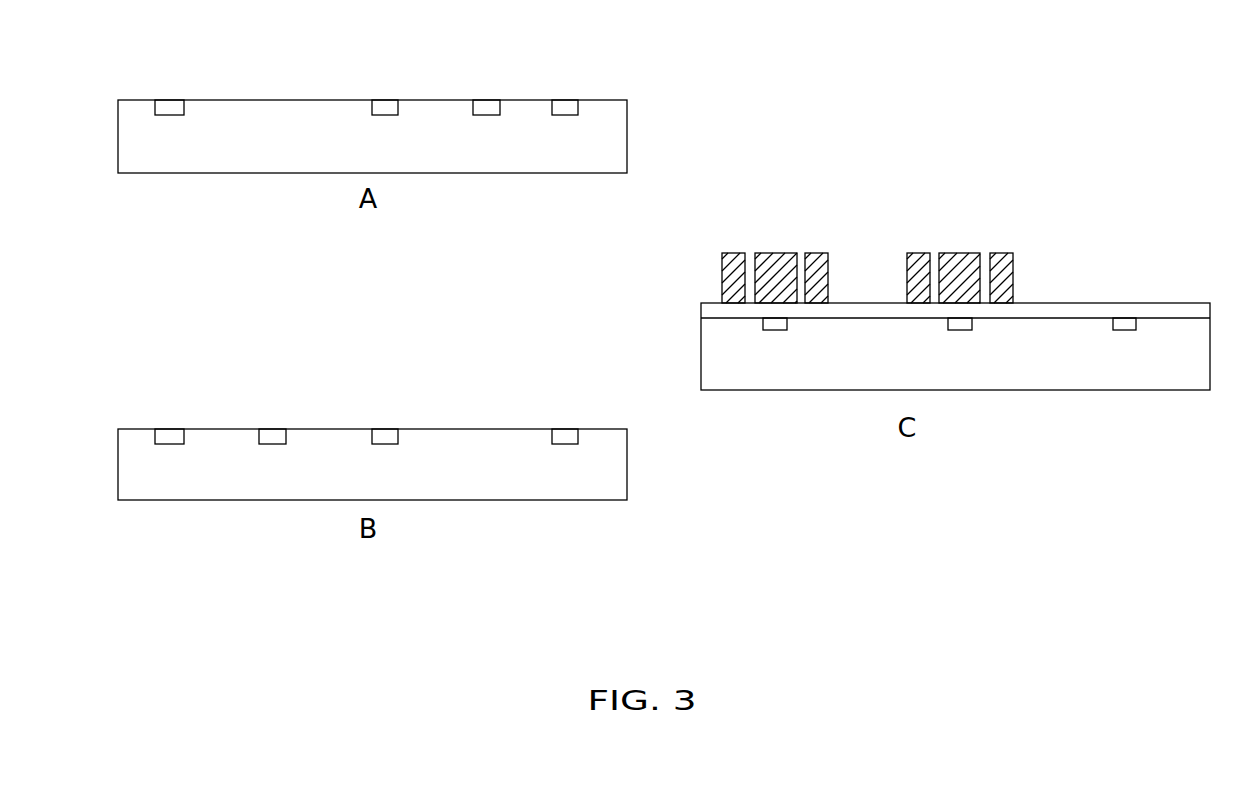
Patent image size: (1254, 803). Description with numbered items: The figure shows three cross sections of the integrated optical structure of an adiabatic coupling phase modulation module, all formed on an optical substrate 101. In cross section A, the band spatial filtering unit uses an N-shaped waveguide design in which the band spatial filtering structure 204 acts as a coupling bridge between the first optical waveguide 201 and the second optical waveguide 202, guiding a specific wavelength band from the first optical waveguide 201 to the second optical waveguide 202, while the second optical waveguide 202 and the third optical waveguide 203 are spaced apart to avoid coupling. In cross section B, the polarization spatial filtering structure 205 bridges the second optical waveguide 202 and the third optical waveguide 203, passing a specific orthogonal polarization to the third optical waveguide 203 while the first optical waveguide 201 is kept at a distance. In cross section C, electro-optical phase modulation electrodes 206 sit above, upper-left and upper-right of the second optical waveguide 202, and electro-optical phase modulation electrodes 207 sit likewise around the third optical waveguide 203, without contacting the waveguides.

The optical substrate 101 is at (297, 125).
The first optical waveguide 201 is at (580, 108).
The second optical waveguide 202 is at (400, 108).
The third optical waveguide 203 is at (185, 108).
The band spatial filtering structure 204 is at (502, 108).
The polarization spatial filtering structure 205 is at (288, 437).
The electro-optical phase modulation electrodes 206 is at (1014, 247).
The electro-optical phase modulation electrodes 207 is at (829, 247).